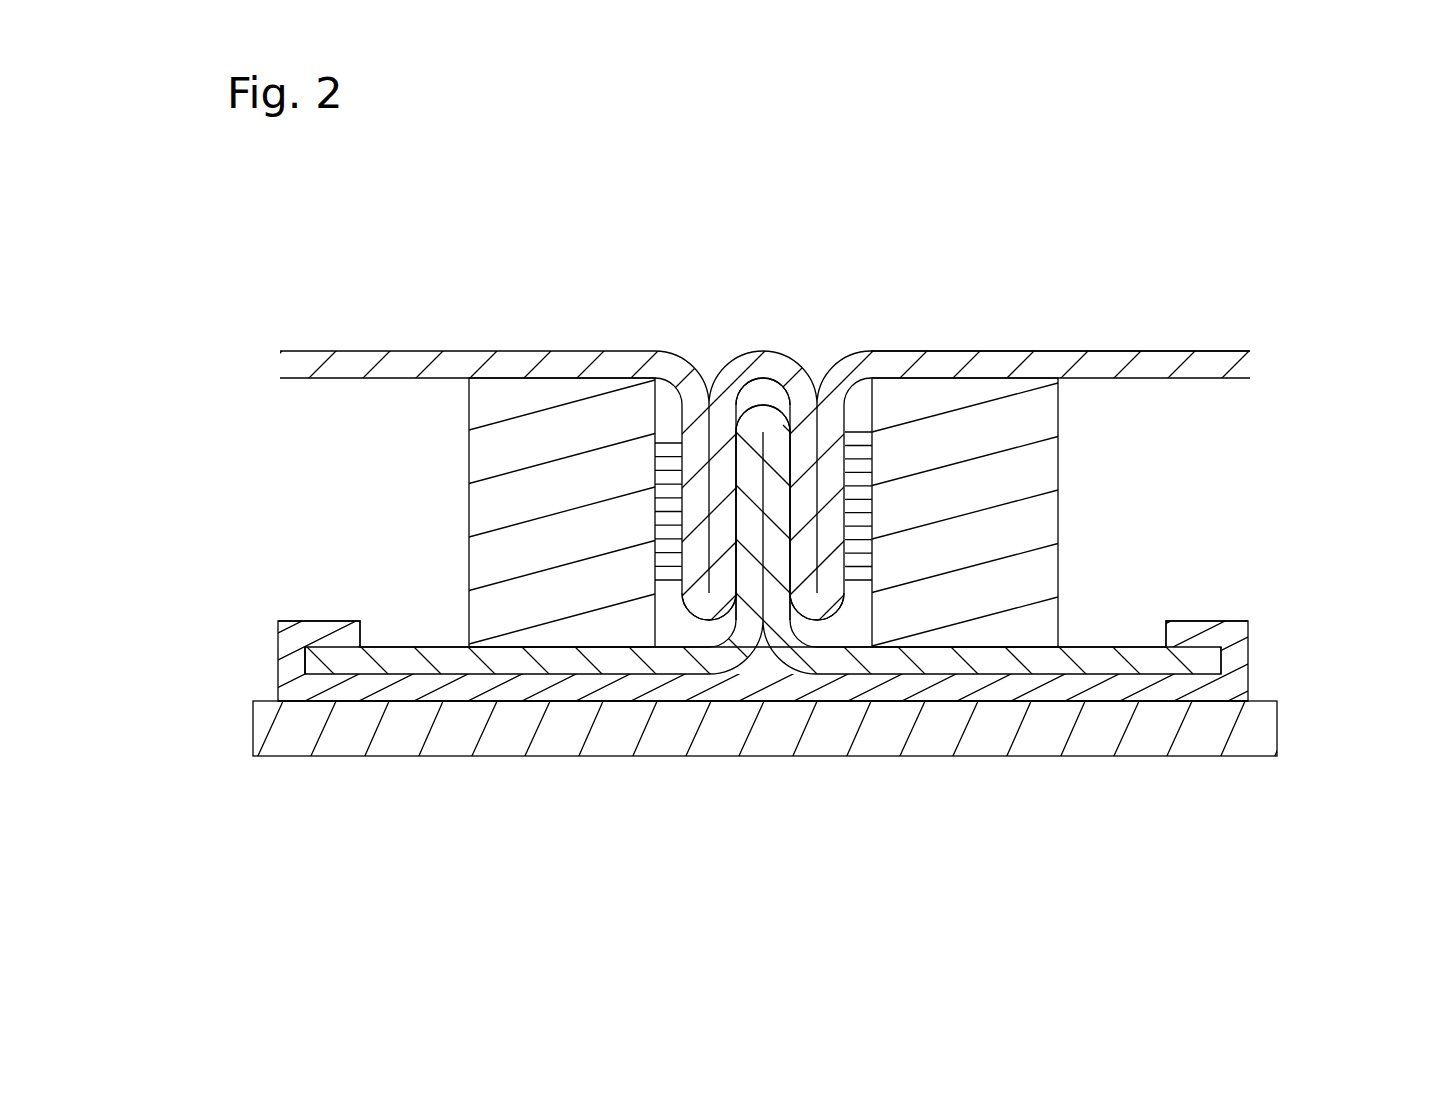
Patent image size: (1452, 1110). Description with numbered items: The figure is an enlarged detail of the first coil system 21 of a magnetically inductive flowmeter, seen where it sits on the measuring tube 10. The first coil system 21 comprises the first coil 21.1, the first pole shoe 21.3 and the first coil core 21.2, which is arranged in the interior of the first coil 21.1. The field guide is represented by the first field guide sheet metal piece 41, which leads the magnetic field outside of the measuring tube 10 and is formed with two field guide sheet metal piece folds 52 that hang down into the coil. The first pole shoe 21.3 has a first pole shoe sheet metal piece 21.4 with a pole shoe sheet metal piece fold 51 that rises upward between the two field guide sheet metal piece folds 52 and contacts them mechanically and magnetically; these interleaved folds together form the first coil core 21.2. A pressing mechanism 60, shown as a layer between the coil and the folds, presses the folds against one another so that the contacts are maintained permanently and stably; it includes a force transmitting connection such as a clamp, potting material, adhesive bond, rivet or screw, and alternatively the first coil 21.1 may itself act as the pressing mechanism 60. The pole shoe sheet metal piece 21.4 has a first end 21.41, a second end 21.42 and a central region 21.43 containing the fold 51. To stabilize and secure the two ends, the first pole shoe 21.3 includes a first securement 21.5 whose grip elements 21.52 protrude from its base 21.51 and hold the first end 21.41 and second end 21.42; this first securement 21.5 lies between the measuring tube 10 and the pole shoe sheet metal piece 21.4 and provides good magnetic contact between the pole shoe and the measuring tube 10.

The measuring tube 10 is at (1194, 728).
The first coil system 21 is at (522, 298).
The first coil 21.1 is at (513, 569).
The first coil core 21.2 is at (817, 352).
The first pole shoe 21.3 is at (320, 664).
The first pole shoe sheet metal piece 21.4 is at (1207, 663).
The first end 21.41 is at (349, 663).
The second end 21.42 is at (1153, 663).
The central region 21.43 is at (763, 660).
The first securement 21.5 is at (1233, 687).
The base 21.51 is at (1101, 661).
The grip element 21.52 is at (1194, 633).
The first field guide sheet metal piece 41 is at (1210, 363).
The pole shoe sheet metal piece fold 51 is at (763, 417).
The field guide sheet metal piece fold 52 is at (708, 603).
The pressing mechanism 60 is at (668, 443).